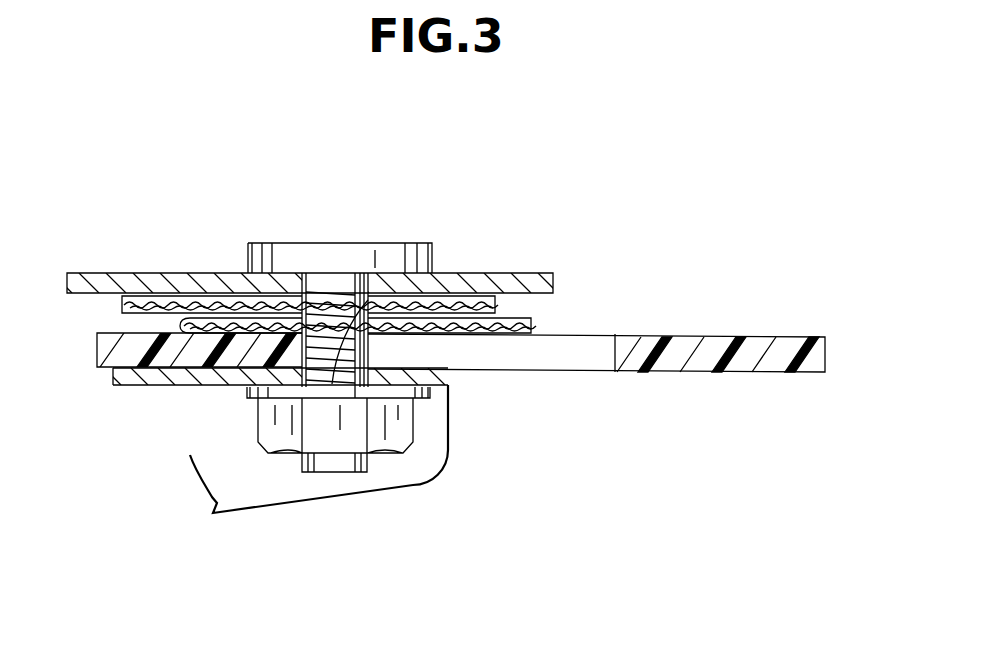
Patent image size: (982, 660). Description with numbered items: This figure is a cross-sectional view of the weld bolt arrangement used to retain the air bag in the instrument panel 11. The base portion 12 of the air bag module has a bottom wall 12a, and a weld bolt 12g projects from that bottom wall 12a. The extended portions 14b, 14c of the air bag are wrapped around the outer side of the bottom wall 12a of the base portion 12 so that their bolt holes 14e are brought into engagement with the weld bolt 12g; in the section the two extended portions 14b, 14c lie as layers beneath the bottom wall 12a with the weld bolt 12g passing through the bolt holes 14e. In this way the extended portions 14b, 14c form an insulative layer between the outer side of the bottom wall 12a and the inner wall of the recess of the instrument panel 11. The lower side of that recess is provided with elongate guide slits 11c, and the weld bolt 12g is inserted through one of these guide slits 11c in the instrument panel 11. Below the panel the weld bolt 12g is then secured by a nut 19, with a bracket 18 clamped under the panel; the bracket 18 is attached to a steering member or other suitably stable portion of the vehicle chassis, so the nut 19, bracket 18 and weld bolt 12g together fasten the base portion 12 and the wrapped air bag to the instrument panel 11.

The instrument panel 11 is at (834, 346).
The elongate guide slits 11c is at (555, 360).
The base portion 12 is at (80, 301).
The bottom wall 12a is at (132, 284).
The weld bolts 12g is at (418, 272).
The extended portion 14b is at (165, 300).
The extended portion 14c is at (195, 326).
The bolt holes 14e is at (325, 300).
The bracket 18 is at (448, 443).
The nuts 19 is at (393, 428).